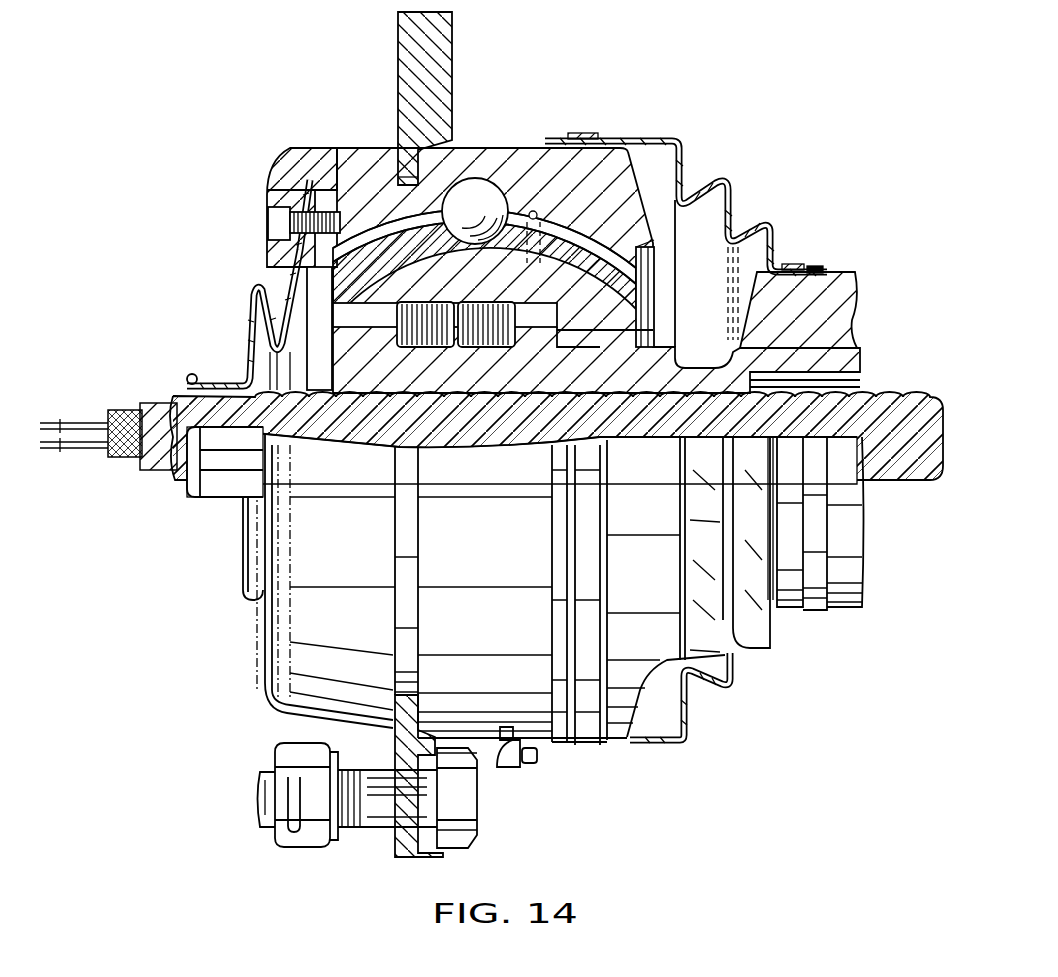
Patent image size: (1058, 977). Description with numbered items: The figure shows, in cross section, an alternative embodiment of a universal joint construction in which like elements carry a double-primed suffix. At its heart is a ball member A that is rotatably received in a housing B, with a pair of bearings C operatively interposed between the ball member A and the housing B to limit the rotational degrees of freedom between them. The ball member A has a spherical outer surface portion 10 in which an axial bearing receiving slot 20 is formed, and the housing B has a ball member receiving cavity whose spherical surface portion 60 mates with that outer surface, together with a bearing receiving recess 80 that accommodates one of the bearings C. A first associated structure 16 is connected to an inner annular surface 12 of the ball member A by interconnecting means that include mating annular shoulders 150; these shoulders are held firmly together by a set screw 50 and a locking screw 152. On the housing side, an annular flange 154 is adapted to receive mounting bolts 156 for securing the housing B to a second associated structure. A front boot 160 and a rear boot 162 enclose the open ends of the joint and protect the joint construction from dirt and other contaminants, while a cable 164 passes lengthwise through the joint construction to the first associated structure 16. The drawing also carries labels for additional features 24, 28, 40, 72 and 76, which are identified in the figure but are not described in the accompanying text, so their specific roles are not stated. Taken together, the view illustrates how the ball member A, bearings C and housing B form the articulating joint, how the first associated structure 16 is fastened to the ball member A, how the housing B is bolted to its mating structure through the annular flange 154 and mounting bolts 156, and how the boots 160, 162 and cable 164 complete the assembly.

The spherical outer surface portion 10 is at (660, 279).
The inner annular surface 12 is at (536, 335).
The first associated structure 16 is at (838, 272).
The axial bearing receiving slot 20 is at (641, 298).
The race ring 24 is at (641, 320).
The side block 28 is at (332, 313).
The housing wall 40 is at (690, 366).
The set screw 50 is at (490, 347).
The spherical surface portion 60 is at (385, 228).
The rotor ring 72 is at (536, 220).
The fitting 76 is at (540, 764).
The bearing receiving recess 80 is at (502, 195).
The mating annular shoulders 150 is at (566, 364).
The locking screw 152 is at (420, 347).
The annular flange 154 is at (452, 37).
The mounting bolts 156 is at (470, 812).
The front boot 160 is at (733, 685).
The rear boot 162 is at (250, 308).
The cable 164 is at (912, 393).
The ball member A is at (345, 340).
The housing B is at (688, 122).
The bearings C is at (483, 178).